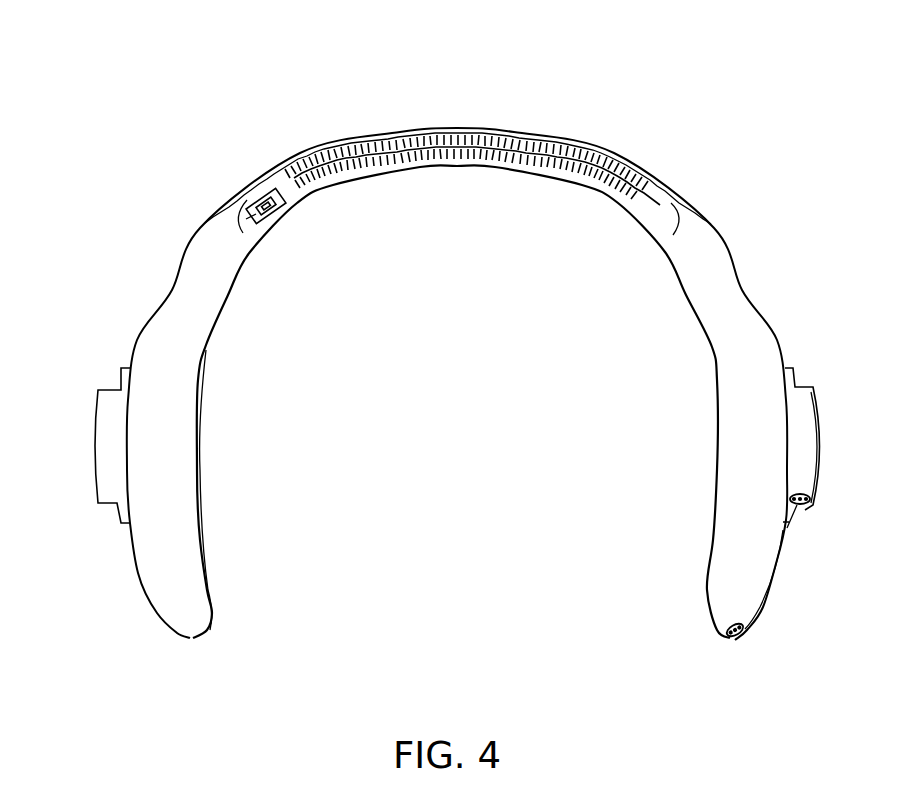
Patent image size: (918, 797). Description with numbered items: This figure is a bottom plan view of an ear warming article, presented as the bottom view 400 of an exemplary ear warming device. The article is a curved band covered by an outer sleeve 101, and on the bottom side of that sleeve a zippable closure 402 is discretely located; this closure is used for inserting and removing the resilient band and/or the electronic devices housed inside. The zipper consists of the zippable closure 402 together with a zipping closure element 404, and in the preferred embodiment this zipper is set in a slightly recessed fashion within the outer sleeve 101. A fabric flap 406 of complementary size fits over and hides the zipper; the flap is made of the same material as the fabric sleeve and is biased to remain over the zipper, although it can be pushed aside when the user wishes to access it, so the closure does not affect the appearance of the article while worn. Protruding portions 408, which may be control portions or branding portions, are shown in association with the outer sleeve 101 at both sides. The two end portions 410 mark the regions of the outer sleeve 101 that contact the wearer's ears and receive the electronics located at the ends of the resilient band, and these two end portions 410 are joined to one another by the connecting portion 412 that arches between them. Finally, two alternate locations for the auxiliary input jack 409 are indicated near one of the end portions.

The bottom view 400 is at (330, 60).
The outer sleeve 101 is at (188, 256).
The zippable closure 402 is at (423, 168).
The zipping closure element 404 is at (268, 196).
The fabric flap 406 is at (632, 170).
The protruding portions 408 is at (97, 498).
The auxiliary input jack 409 is at (803, 506).
The end portions 410 is at (213, 529).
The connecting portion 412 is at (461, 179).